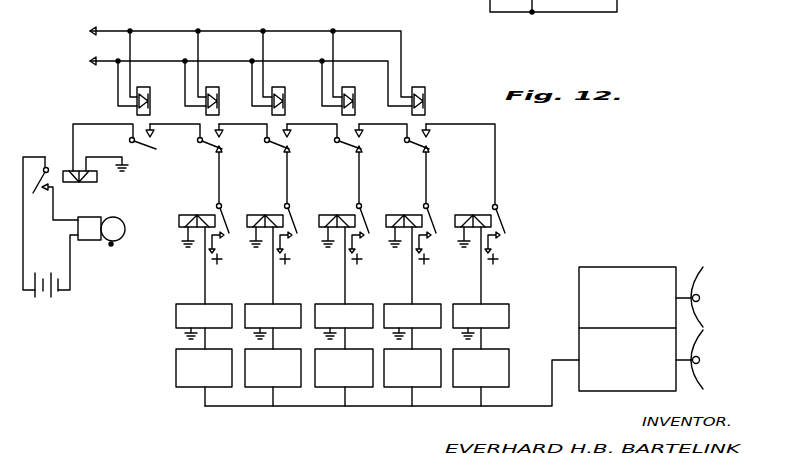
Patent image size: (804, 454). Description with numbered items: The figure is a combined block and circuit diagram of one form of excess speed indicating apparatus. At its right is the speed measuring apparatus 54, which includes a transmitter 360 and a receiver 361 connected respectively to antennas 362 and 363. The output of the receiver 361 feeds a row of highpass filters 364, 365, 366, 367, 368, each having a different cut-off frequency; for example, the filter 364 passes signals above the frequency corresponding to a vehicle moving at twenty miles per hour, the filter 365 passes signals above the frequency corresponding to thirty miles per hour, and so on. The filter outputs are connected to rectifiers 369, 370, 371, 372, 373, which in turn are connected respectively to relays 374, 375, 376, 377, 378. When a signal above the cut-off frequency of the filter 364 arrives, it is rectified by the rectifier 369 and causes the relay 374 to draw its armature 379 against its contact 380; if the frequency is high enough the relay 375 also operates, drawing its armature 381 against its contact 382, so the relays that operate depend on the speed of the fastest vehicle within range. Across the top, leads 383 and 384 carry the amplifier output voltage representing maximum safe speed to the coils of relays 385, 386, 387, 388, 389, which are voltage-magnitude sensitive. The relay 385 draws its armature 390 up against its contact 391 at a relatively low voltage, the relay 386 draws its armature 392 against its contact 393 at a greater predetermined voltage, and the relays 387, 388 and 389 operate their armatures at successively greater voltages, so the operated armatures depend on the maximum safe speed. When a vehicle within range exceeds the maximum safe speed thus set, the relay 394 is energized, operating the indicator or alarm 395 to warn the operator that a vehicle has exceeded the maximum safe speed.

The speed measuring apparatus 54 is at (611, 315).
The transmitter 360 is at (579, 309).
The receiver 361 is at (579, 343).
The antenna 362 is at (702, 285).
The antenna 363 is at (705, 347).
The highpass filter 364 is at (192, 388).
The highpass filter 365 is at (258, 388).
The highpass filter 366 is at (327, 388).
The highpass filter 367 is at (393, 388).
The highpass filter 368 is at (462, 388).
The rectifier 369 is at (184, 297).
The rectifier 370 is at (256, 297).
The rectifier 371 is at (328, 297).
The rectifier 372 is at (393, 297).
The rectifier 373 is at (460, 297).
The relay 374 is at (197, 213).
The relay 375 is at (265, 213).
The relay 376 is at (337, 213).
The relay 377 is at (404, 213).
The relay 378 is at (473, 213).
The armature 379 is at (223, 212).
The contact 380 is at (222, 240).
The armature 381 is at (291, 218).
The contact 382 is at (291, 240).
The lead 383 is at (152, 31).
The lead 384 is at (150, 61).
The relay 385 is at (144, 87).
The relay 386 is at (213, 87).
The relay 387 is at (279, 87).
The relay 388 is at (349, 87).
The relay 389 is at (419, 87).
The armature 390 is at (146, 154).
The contact 391 is at (156, 135).
The armature 392 is at (211, 152).
The contact 393 is at (226, 135).
The relay 394 is at (84, 183).
The indicator or alarm 395 is at (77, 242).